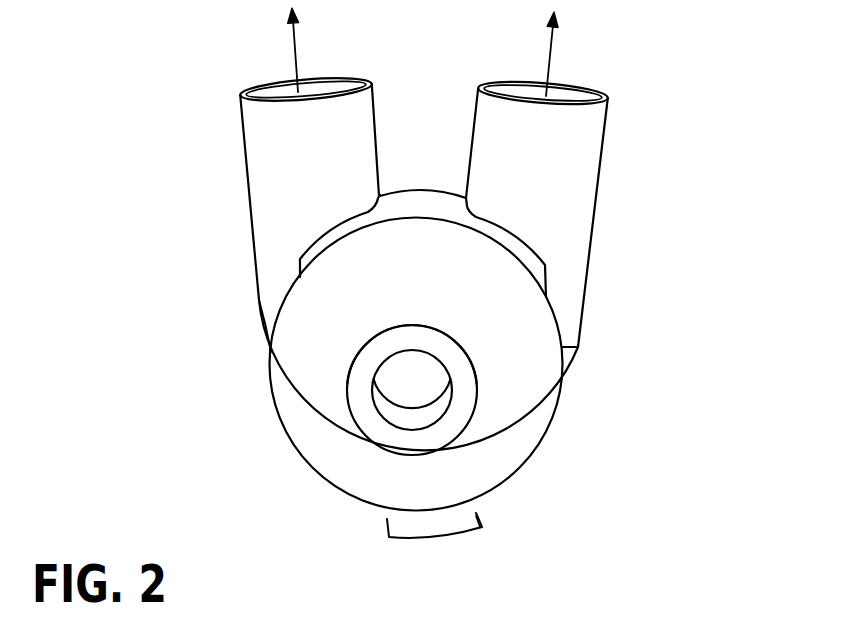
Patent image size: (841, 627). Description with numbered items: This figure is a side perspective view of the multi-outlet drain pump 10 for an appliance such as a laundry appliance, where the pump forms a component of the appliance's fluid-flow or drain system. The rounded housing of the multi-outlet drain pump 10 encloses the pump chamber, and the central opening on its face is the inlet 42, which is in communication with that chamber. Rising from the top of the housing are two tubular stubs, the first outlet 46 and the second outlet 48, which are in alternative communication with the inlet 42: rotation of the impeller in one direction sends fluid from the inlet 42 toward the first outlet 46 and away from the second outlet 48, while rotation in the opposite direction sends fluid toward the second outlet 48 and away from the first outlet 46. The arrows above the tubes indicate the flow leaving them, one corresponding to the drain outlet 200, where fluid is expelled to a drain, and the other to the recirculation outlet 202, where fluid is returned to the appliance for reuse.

The multi-outlet drain pump 10 is at (243, 400).
The inlet 42 is at (480, 385).
The first outlet 46 is at (605, 183).
The second outlet 48 is at (238, 163).
The drain outlet 200 is at (575, 80).
The recirculation outlet 202 is at (273, 75).